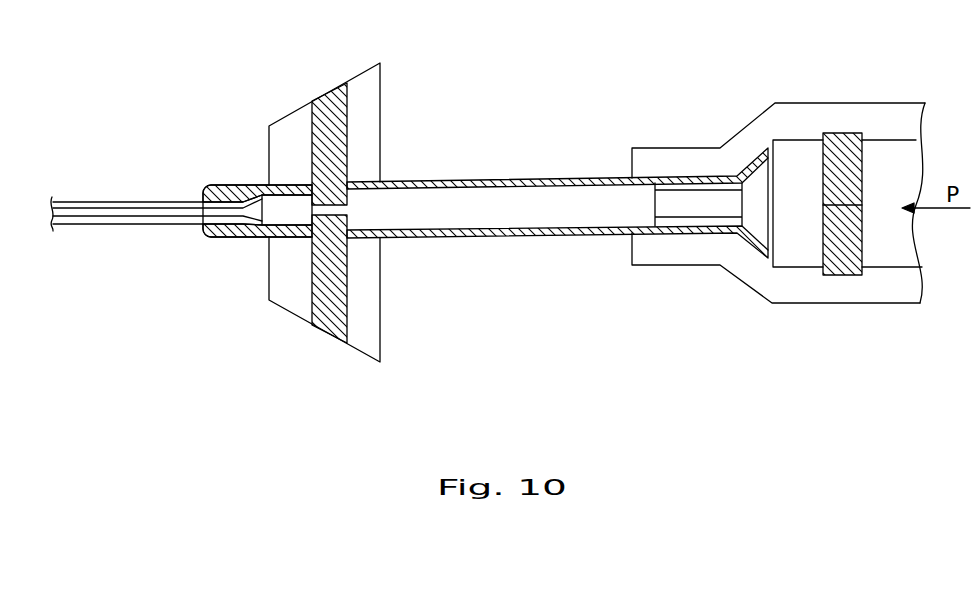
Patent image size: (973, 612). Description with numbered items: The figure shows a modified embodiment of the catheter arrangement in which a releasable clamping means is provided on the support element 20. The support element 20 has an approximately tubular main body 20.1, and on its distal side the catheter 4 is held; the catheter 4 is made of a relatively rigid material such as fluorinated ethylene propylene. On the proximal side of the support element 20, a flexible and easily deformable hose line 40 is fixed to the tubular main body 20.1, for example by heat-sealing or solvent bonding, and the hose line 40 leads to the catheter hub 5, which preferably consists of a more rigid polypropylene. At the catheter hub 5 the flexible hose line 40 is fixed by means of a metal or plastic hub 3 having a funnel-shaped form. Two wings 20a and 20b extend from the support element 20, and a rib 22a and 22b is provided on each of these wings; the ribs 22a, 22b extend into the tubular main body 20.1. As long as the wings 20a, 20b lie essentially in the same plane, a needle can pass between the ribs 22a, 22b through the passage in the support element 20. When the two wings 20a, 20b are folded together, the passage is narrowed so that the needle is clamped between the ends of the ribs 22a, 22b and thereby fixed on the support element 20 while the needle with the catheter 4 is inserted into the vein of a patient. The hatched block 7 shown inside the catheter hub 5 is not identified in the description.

The hub 3 is at (702, 192).
The catheter 4 is at (102, 226).
The catheter hub 5 is at (774, 127).
The sealing block 7 is at (838, 258).
The support element 20 is at (250, 167).
The tubular main body 20.1 is at (287, 237).
The wing 20a is at (383, 88).
The wing 20b is at (381, 327).
The rib 22a is at (313, 113).
The rib 22b is at (312, 300).
The hose line 40 is at (532, 238).